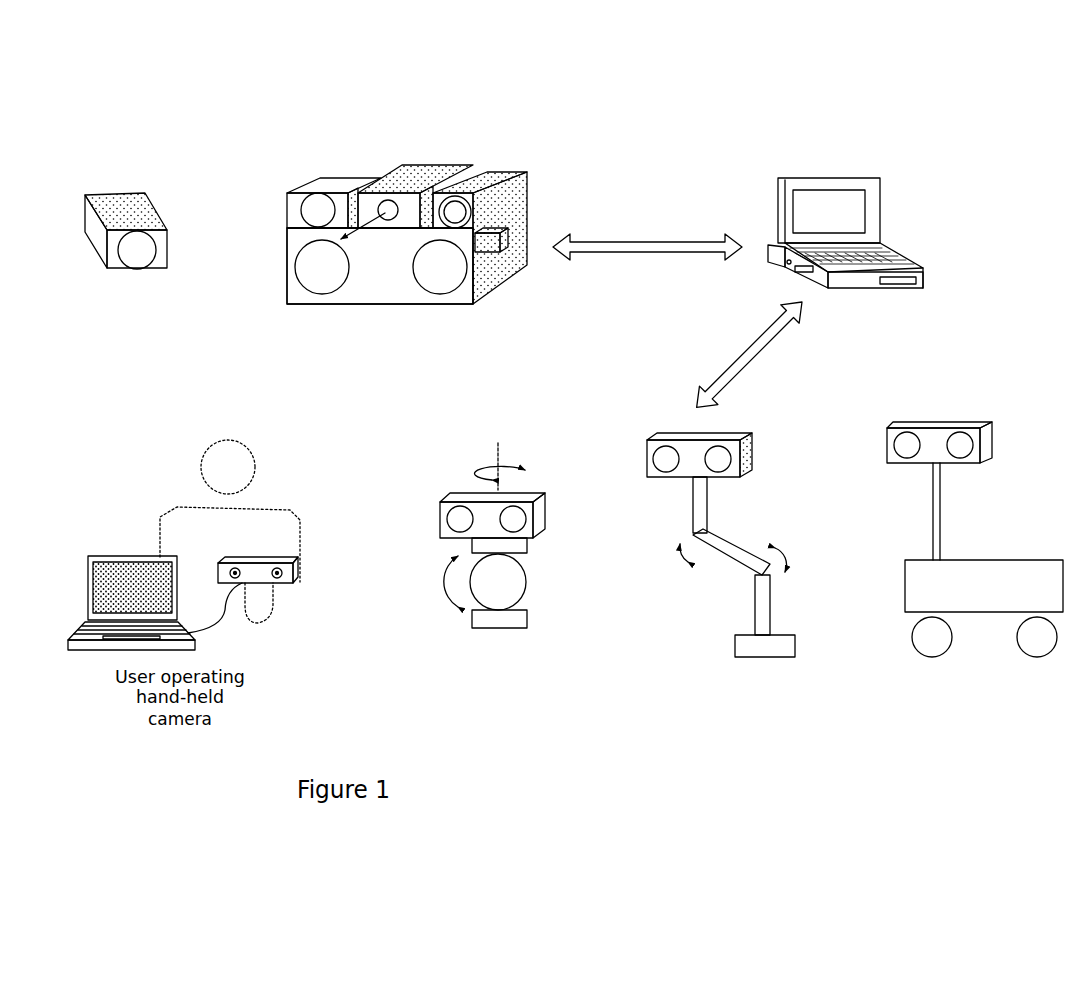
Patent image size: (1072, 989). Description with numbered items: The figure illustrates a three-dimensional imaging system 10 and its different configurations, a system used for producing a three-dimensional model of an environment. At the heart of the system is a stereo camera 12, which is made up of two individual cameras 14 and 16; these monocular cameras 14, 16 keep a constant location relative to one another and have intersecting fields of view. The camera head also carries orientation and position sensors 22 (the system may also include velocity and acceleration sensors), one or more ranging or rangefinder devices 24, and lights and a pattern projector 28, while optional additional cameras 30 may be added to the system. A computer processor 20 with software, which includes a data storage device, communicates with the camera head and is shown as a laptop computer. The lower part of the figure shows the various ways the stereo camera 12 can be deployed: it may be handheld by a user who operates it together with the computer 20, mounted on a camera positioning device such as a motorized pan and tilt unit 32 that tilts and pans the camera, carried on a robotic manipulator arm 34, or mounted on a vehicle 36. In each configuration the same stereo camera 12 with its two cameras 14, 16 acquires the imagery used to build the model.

The 3D imaging system 10 is at (419, 203).
The stereo camera 12 is at (380, 278).
The individual camera 14 is at (308, 273).
The individual camera 16 is at (440, 267).
The computer processor 20 is at (923, 282).
The orientation, position, velocity and acceleration sensors 22 is at (574, 199).
The rangefinder device 24 is at (405, 168).
The pattern projector 28 is at (488, 172).
The additional cameras 30 is at (285, 208).
The pan-tilt unit 32 is at (448, 497).
The robot arm 34 is at (647, 442).
The vehicle 36 is at (885, 443).